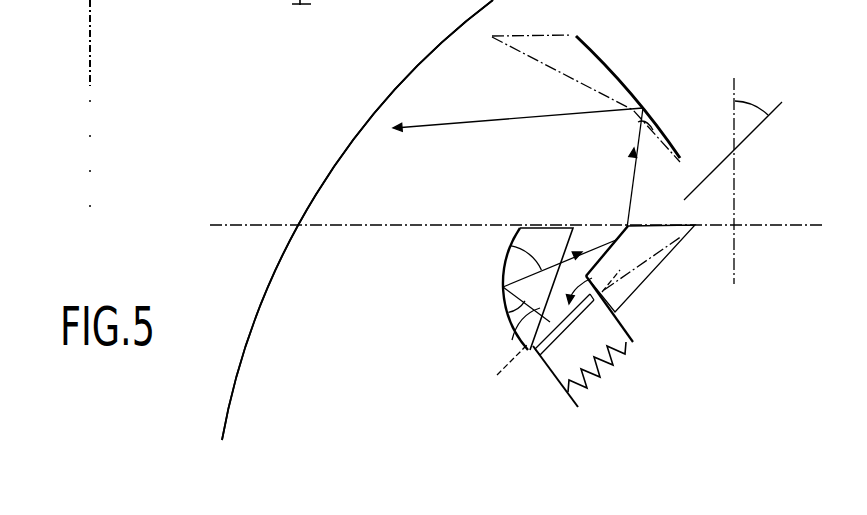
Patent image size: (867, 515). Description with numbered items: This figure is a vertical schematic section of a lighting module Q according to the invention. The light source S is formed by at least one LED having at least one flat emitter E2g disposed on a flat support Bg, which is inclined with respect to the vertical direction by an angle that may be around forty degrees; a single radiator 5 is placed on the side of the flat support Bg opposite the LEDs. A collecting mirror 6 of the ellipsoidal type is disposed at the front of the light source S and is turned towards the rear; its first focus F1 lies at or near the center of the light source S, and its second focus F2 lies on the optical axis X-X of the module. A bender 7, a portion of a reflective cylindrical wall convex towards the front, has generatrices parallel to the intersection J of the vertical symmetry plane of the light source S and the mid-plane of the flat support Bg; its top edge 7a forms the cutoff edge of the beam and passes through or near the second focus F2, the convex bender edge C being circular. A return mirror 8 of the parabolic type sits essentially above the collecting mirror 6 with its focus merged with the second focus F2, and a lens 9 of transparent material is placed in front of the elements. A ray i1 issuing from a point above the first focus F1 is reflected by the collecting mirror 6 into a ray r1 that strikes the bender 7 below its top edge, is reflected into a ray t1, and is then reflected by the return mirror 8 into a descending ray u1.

The radiator 5 is at (622, 368).
The collecting mirror 6 is at (503, 264).
The bender 7 is at (594, 230).
The top edge of the bender 7a is at (632, 194).
The return mirror 8 is at (606, 62).
The lens 9 is at (350, 143).
The lighting module Q is at (298, 180).
The optical axis X is at (236, 222).
The light source S is at (632, 286).
The convex bender edge C is at (681, 222).
The intersection of the symmetry plane and support mid-plane J is at (749, 136).
The descending ray u1 is at (479, 118).
The ray reflected by the bender t1 is at (649, 113).
The ray reflected by the collecting mirror r1 is at (512, 252).
The incident ray i1 is at (512, 302).
The first focus F1 is at (508, 335).
The second focus F2 is at (622, 214).
The flat emitter E2g is at (492, 368).
The flat support Bg is at (534, 352).